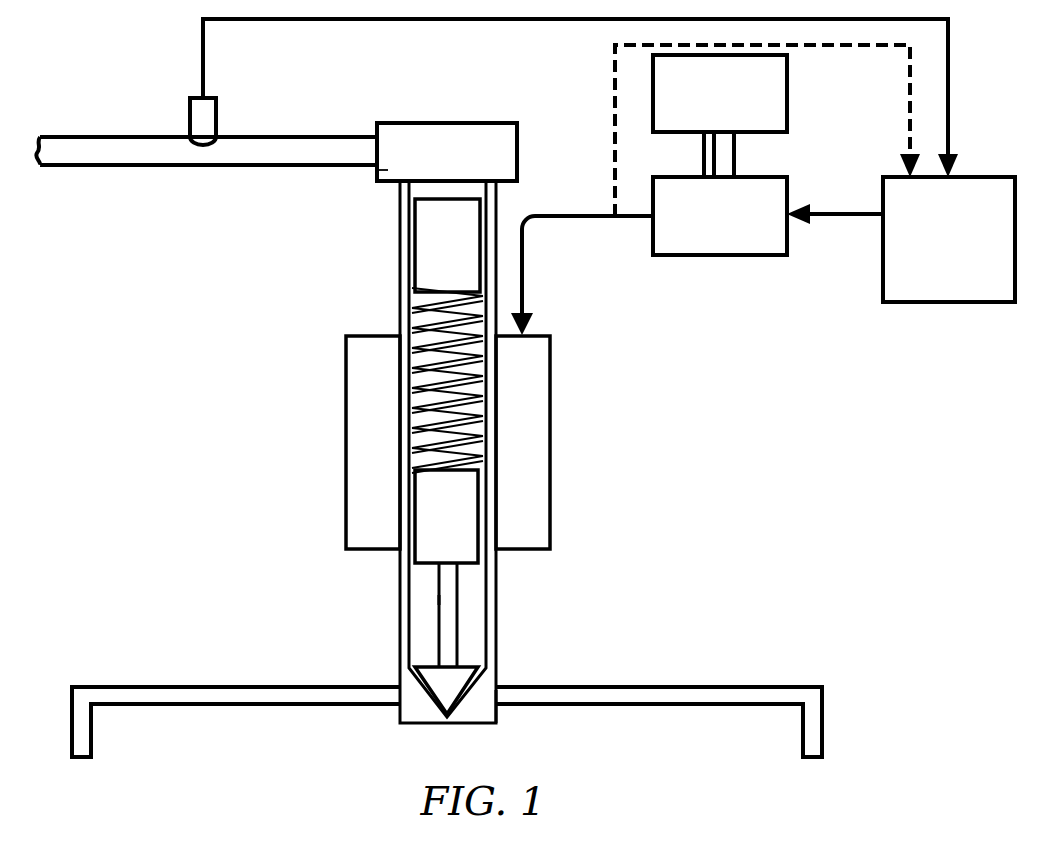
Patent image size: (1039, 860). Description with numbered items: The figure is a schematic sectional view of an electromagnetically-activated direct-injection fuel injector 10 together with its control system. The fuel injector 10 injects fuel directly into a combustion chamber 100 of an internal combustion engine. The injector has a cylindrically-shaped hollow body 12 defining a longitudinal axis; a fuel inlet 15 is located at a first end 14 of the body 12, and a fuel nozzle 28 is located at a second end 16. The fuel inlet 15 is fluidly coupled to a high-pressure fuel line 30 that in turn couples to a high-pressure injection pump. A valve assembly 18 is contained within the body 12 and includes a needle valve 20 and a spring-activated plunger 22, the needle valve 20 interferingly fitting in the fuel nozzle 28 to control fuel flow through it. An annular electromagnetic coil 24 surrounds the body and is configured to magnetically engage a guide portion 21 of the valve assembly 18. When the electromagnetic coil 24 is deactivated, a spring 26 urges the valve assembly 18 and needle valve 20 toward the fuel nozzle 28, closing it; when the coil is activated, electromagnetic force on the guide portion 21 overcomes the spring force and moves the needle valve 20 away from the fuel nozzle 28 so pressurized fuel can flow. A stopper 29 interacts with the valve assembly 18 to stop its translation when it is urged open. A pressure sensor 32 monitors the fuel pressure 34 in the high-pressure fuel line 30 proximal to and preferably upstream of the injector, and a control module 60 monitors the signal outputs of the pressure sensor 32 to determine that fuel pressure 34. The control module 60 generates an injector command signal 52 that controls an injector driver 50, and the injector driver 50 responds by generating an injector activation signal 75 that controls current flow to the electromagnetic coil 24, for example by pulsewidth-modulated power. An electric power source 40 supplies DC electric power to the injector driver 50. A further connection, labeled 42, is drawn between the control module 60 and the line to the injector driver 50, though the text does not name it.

The fuel injector 10 is at (336, 433).
The body 12 is at (403, 245).
The first end 14 is at (378, 186).
The fuel inlet 15 is at (388, 172).
The second end 16 is at (497, 681).
The valve assembly 18 is at (437, 600).
The needle valve 20 is at (445, 689).
The guide portion 21 is at (422, 535).
The spring-activated plunger 22 is at (446, 649).
The electromagnetic coil 24 is at (530, 457).
The spring 26 is at (488, 323).
The fuel nozzle 28 is at (448, 717).
The stopper 29 is at (423, 277).
The high-pressure fuel line 30 is at (103, 137).
The pressure sensor 32 is at (190, 118).
The fuel pressure 34 is at (580, 98).
The electric power source 40 is at (720, 116).
The feedback signal line 42 is at (751, 130).
The injector driver 50 is at (720, 216).
The injector command signal 52 is at (835, 225).
The control module 60 is at (949, 239).
The injector activation signal 75 is at (594, 232).
The combustion chamber 100 is at (447, 722).